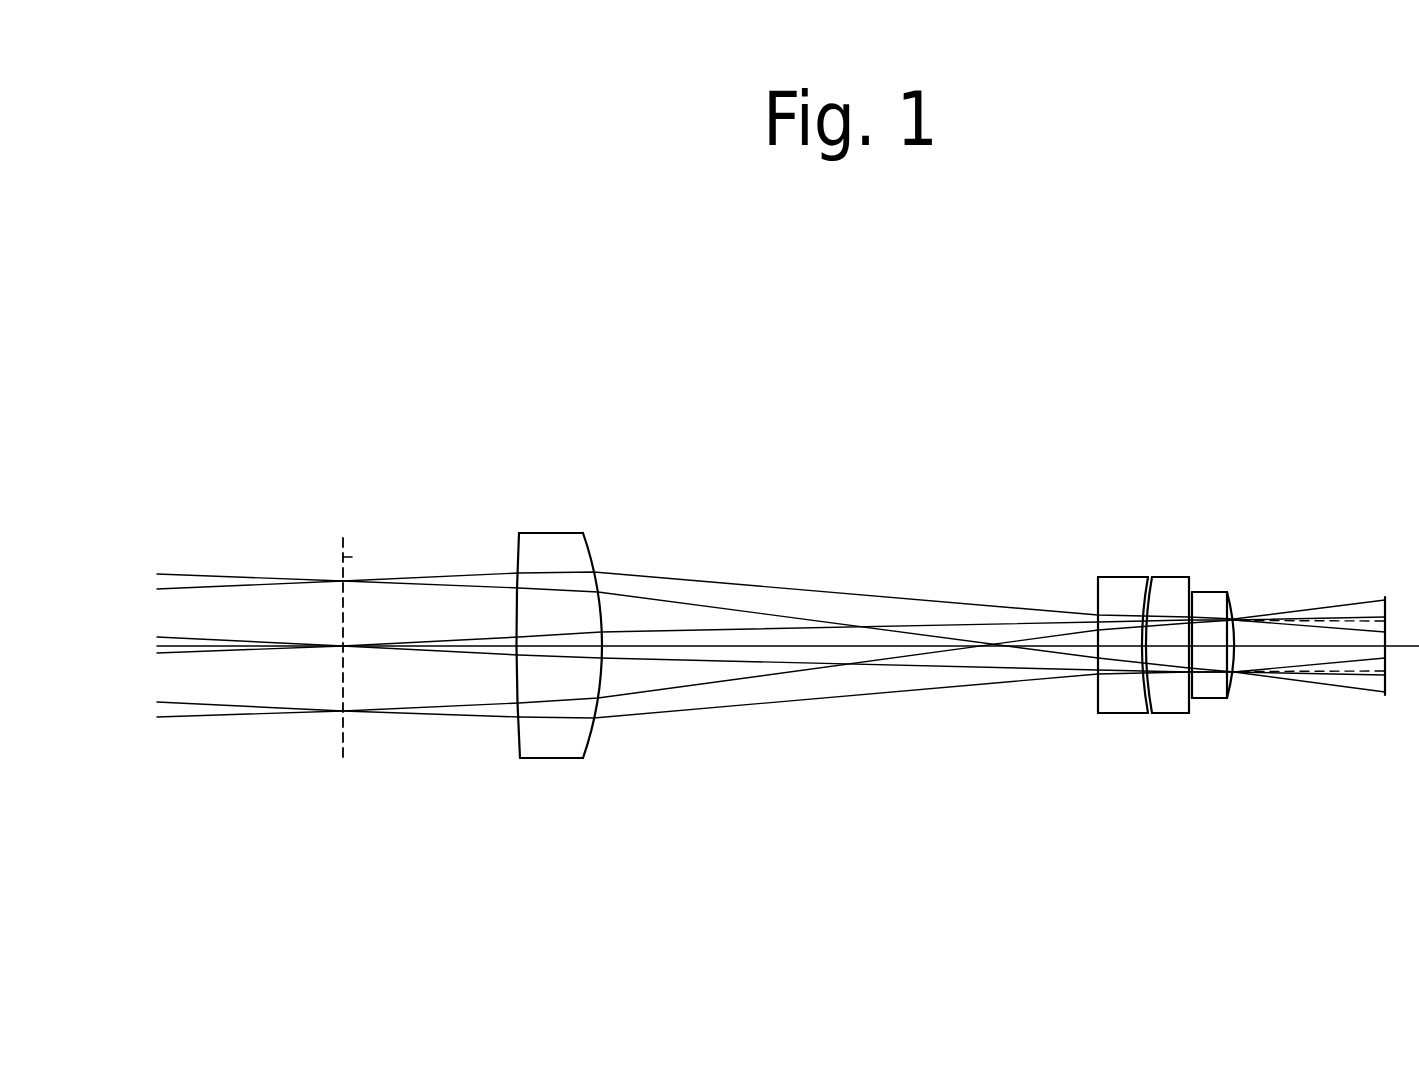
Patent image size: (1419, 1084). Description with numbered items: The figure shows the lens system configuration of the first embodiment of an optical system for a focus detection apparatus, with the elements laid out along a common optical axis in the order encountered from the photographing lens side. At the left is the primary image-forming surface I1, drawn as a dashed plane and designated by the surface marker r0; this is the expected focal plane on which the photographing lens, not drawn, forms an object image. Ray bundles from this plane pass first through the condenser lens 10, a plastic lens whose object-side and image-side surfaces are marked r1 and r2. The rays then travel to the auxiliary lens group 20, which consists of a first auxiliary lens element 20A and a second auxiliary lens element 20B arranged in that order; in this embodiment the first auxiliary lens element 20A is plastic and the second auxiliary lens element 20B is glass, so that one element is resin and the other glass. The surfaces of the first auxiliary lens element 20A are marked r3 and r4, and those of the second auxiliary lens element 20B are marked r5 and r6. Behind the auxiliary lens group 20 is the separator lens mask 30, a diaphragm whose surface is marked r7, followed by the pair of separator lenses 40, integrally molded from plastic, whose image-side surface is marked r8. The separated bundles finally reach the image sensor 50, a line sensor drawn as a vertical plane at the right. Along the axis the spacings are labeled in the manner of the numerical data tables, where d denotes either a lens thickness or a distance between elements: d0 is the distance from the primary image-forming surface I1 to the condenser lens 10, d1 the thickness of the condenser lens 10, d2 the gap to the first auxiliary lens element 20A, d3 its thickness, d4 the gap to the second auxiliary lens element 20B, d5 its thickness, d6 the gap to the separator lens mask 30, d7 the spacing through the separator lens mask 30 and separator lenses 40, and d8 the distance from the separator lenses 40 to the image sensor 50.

The primary image-forming surface I1 is at (343, 540).
The radius of curvature of primary image-forming surface r0 is at (350, 557).
The condenser lens 10 is at (548, 549).
The radius of curvature of condenser lens object-side surface r1 is at (517, 532).
The radius of curvature of condenser lens image-side surface r2 is at (585, 533).
The auxiliary lens group 20 is at (1105, 512).
The first auxiliary lens element 20A is at (1068, 542).
The second auxiliary lens element 20B is at (1184, 542).
The radius of curvature of first auxiliary lens element object-side surface r3 is at (1097, 580).
The radius of curvature of first auxiliary lens element image-side surface r4 is at (1143, 585).
The radius of curvature of second auxiliary lens element object-side surface r5 is at (1172, 585).
The radius of curvature of second auxiliary lens element image-side surface r6 is at (1190, 583).
The separator lens mask 30 is at (1234, 512).
The radius of curvature of separator lens mask surface r7 is at (1215, 592).
The radius of curvature of separator lens surface r8 is at (1235, 600).
The pair of separator lenses 40 is at (1284, 531).
The image sensor 50 is at (1386, 597).
The distance from primary image-forming surface to condenser lens d0 is at (452, 648).
The thickness of condenser lens d1 is at (553, 648).
The distance from condenser lens to first auxiliary lens element d2 is at (758, 648).
The thickness of first auxiliary lens element d3 is at (1118, 648).
The distance from first to second auxiliary lens element d4 is at (1138, 648).
The thickness of second auxiliary lens element d5 is at (1155, 648).
The distance from second auxiliary lens element to separator lens mask d6 is at (1185, 652).
The thickness of separator lens mask and separator lens d7 is at (1213, 648).
The distance from separator lens to image sensor d8 is at (1320, 648).